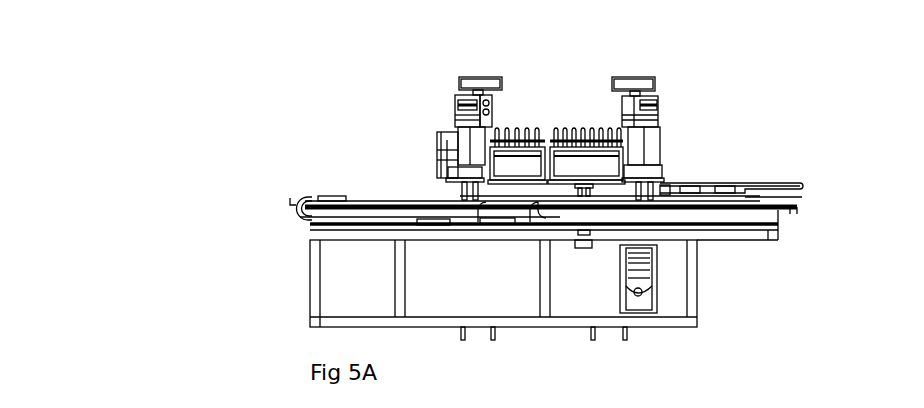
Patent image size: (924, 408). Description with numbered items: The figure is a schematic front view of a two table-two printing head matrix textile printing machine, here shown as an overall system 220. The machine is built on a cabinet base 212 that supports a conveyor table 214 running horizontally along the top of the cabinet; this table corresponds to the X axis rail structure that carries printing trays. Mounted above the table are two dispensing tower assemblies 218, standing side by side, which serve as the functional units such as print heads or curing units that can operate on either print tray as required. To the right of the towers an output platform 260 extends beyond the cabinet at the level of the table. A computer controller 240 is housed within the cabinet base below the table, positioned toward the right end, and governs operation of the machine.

The cabinet base 212 is at (316, 262).
The conveyor table 214 is at (384, 213).
The dispensing tower assembly 218 is at (500, 94).
The dispensing system 220 is at (805, 88).
The computer controller 240 is at (653, 285).
The output platform 260 is at (755, 183).